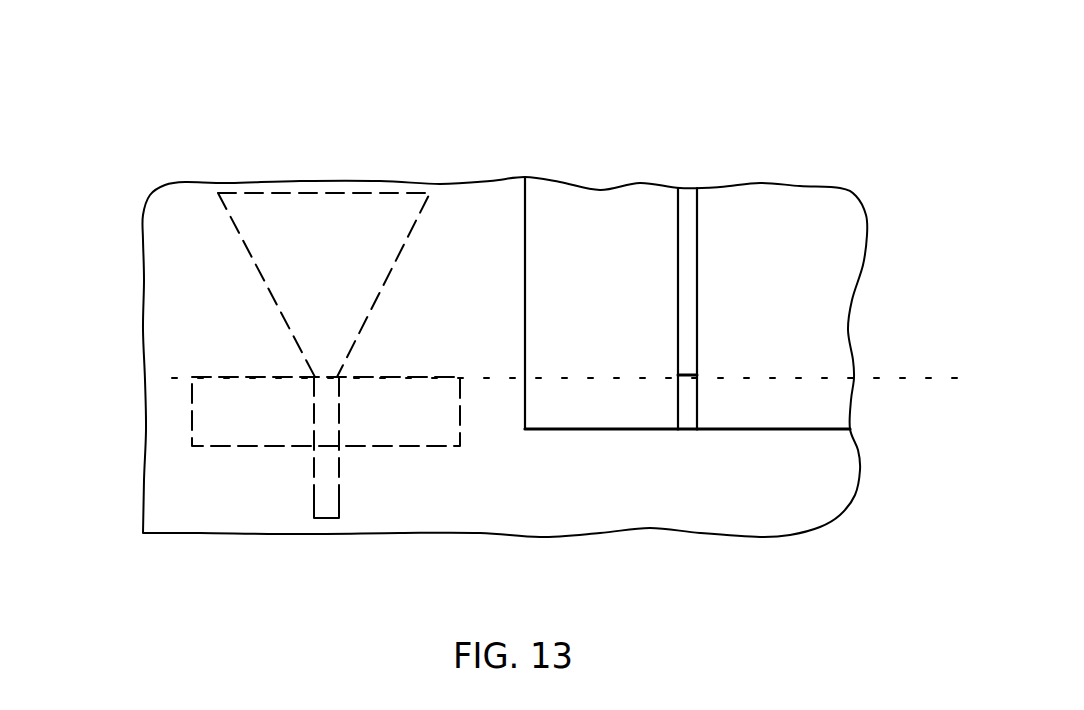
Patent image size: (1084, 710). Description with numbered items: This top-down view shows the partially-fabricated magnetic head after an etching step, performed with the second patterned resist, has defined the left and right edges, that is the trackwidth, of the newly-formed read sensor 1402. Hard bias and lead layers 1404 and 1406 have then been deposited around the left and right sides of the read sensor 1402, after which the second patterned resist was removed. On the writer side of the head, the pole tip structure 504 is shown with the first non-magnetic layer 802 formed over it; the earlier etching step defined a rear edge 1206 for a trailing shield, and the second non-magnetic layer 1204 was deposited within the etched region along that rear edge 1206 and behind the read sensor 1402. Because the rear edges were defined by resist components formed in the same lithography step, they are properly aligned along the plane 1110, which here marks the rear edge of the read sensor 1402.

The second non-magnetic layer 1204 is at (148, 277).
The hard bias and lead layer 1404 is at (643, 205).
The hard bias and lead layer 1406 is at (732, 205).
The read sensor 1402 is at (693, 400).
The alignment plane 1110 is at (877, 378).
The first non-magnetic layer 802 is at (348, 430).
The rear edge of trailing shield 1206 is at (330, 373).
The pole tip structure 504 is at (317, 373).